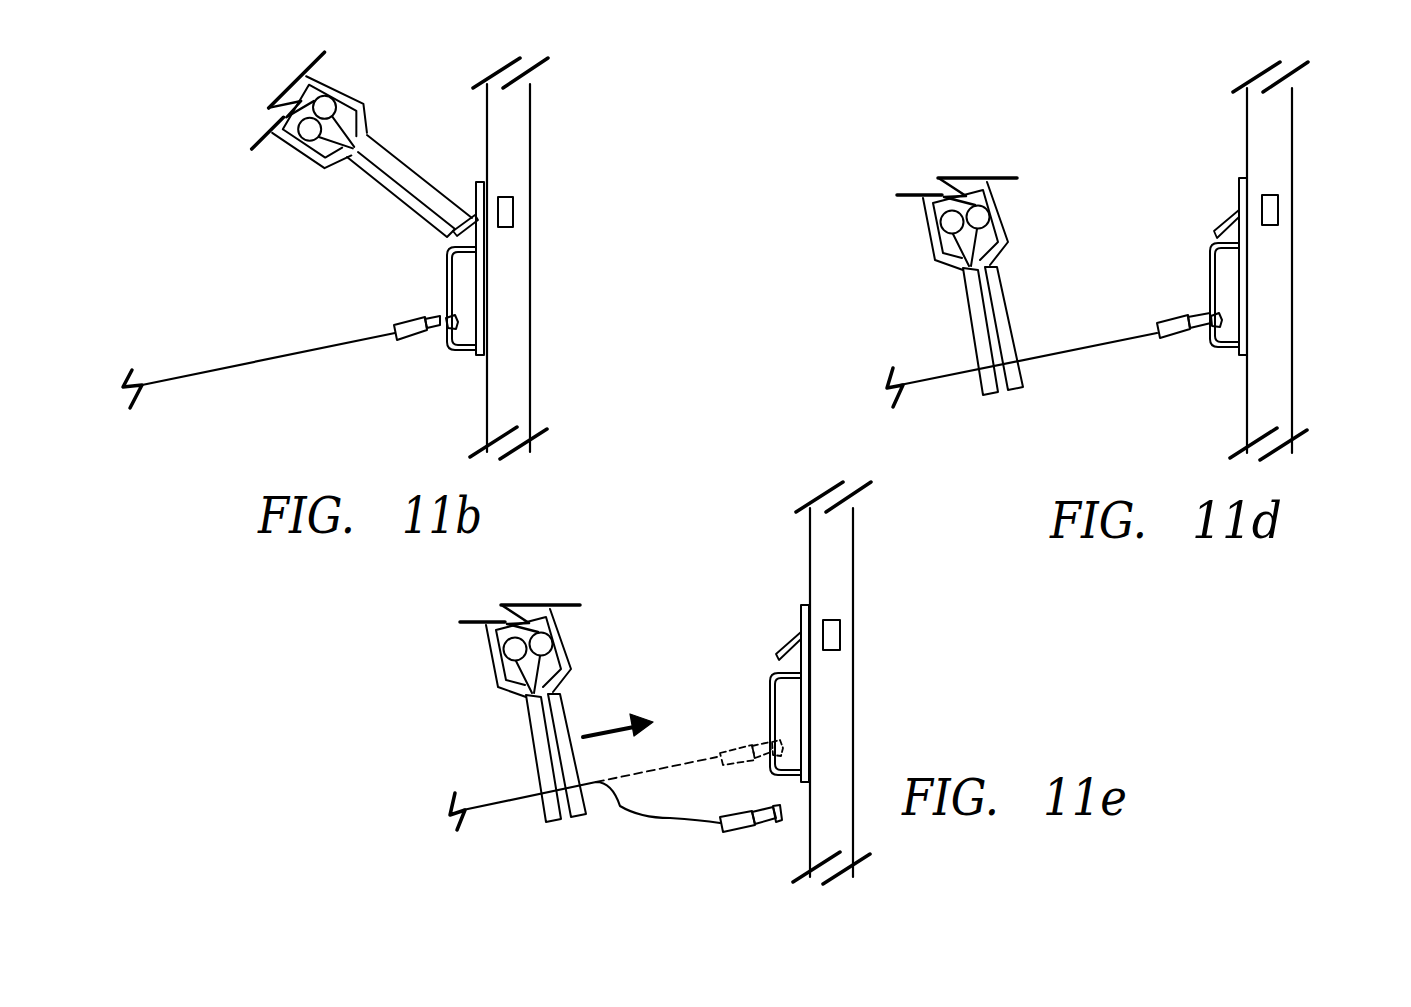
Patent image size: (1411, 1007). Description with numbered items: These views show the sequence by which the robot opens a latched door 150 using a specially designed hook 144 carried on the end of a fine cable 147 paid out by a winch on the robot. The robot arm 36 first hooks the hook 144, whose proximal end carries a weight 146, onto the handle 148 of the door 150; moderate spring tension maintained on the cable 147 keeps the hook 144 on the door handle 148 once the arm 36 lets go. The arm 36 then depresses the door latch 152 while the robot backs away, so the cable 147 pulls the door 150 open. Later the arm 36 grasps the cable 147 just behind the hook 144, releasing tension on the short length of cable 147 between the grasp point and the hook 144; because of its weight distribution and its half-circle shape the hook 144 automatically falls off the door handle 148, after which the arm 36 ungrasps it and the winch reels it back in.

In FIG. 11B, the robotic arm with gripper head 36 is at (387, 187).
In FIG. 11D, the robotic arm with gripper head 36 is at (967, 308).
In FIG. 11E, the robotic arm with gripper head 36 is at (528, 735).
In FIG. 11B, the hook 144 is at (448, 320).
In FIG. 11D, the hook 144 is at (1210, 315).
In FIG. 11E, the hook 144 is at (760, 827).
In FIG. 11B, the weight 146 is at (410, 358).
In FIG. 11D, the weight 146 is at (1175, 340).
In FIG. 11E, the weight 146 is at (733, 833).
In FIG. 11B, the fine cable 147 is at (217, 368).
In FIG. 11D, the fine cable 147 is at (935, 377).
In FIG. 11E, the fine cable 147 is at (527, 797).
In FIG. 11B, the door handle 148 is at (447, 265).
In FIG. 11D, the door handle 148 is at (1210, 263).
In FIG. 11E, the door handle 148 is at (770, 682).
In FIG. 11B, the door 150 is at (512, 262).
In FIG. 11D, the door 150 is at (1275, 265).
In FIG. 11E, the door 150 is at (855, 685).
In FIG. 11B, the door latch 152 is at (473, 213).
In FIG. 11D, the door latch 152 is at (1230, 215).
In FIG. 11E, the door latch 152 is at (783, 645).